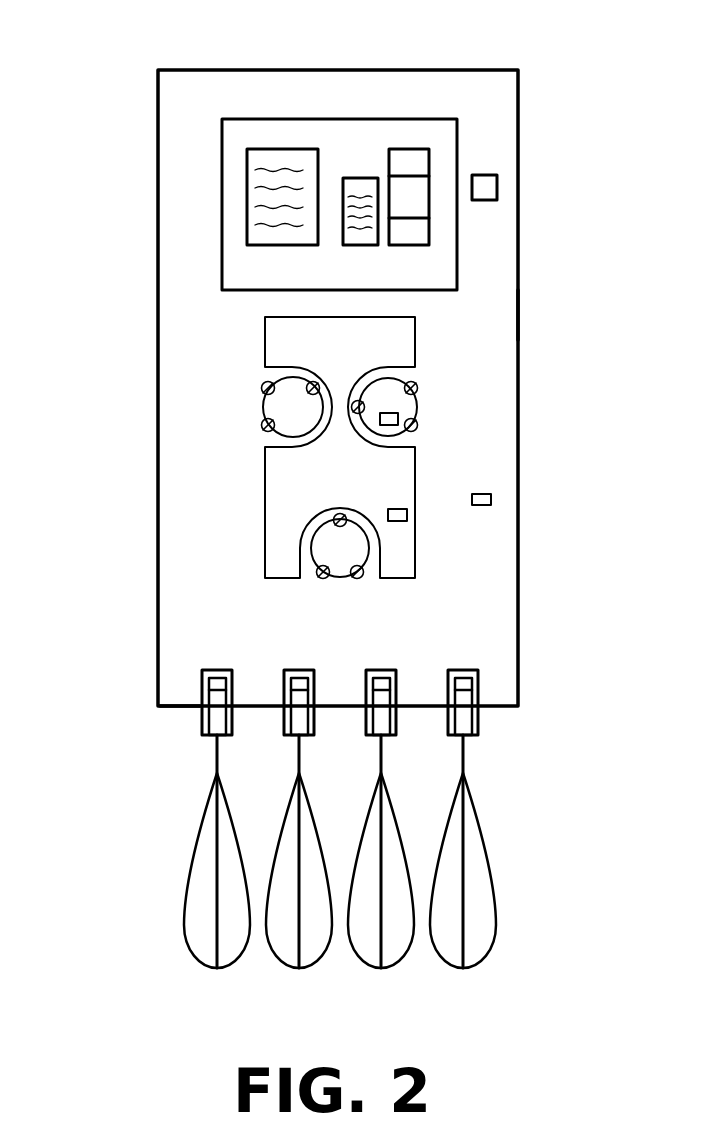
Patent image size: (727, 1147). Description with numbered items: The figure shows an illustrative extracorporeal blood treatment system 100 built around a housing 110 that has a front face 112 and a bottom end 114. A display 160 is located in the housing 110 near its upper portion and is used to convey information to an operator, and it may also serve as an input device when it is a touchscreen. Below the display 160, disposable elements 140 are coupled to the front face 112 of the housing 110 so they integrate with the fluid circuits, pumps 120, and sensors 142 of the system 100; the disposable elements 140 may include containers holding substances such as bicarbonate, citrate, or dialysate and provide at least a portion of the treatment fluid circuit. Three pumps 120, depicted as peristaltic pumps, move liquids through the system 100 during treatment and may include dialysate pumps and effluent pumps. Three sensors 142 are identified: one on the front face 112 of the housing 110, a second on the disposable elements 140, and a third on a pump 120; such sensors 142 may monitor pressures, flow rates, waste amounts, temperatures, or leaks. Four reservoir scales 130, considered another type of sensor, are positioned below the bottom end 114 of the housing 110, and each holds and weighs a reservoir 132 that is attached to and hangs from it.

The extracorporeal blood treatment system 100 is at (89, 57).
The housing 110 is at (518, 465).
The front face 112 is at (497, 313).
The bottom end 114 is at (182, 706).
The pump 120 is at (292, 407).
The reservoir scale 130 is at (297, 730).
The reservoir 132 is at (270, 956).
The disposable element 140 is at (265, 333).
The sensor 142 is at (414, 427).
The display 160 is at (222, 198).